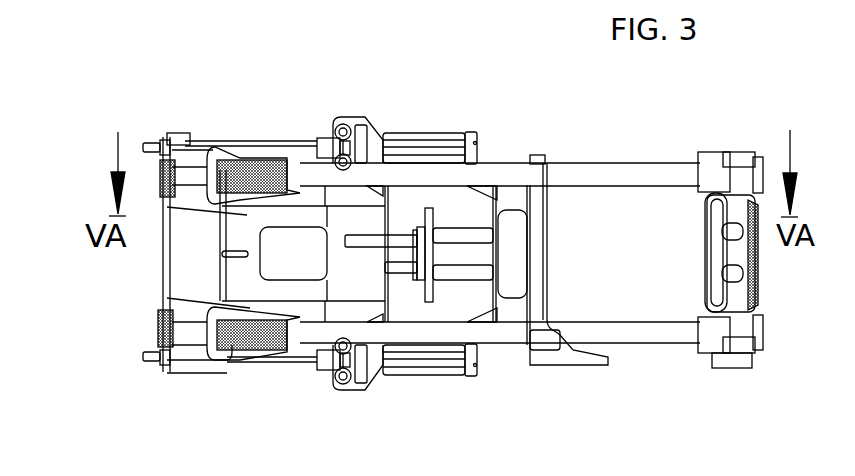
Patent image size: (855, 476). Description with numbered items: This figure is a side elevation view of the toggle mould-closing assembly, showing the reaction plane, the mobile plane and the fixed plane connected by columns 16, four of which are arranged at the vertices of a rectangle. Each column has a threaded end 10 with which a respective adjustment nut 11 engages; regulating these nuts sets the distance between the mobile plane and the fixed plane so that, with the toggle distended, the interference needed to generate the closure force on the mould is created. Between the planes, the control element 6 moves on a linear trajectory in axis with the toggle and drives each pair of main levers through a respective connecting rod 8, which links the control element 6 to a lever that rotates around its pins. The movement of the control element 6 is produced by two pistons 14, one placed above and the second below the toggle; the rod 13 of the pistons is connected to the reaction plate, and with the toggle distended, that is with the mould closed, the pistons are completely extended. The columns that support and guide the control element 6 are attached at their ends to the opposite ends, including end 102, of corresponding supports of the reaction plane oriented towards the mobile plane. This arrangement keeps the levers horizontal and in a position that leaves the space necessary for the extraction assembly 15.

The control element 6 is at (378, 135).
The connecting rod 8 is at (335, 125).
The threaded end 10 is at (263, 352).
The adjustment nut 11 is at (155, 148).
The rod 13 is at (280, 170).
The piston 14 is at (430, 140).
The extraction assembly 15 is at (470, 215).
The column 16 is at (633, 176).
The end of support 102 is at (302, 200).